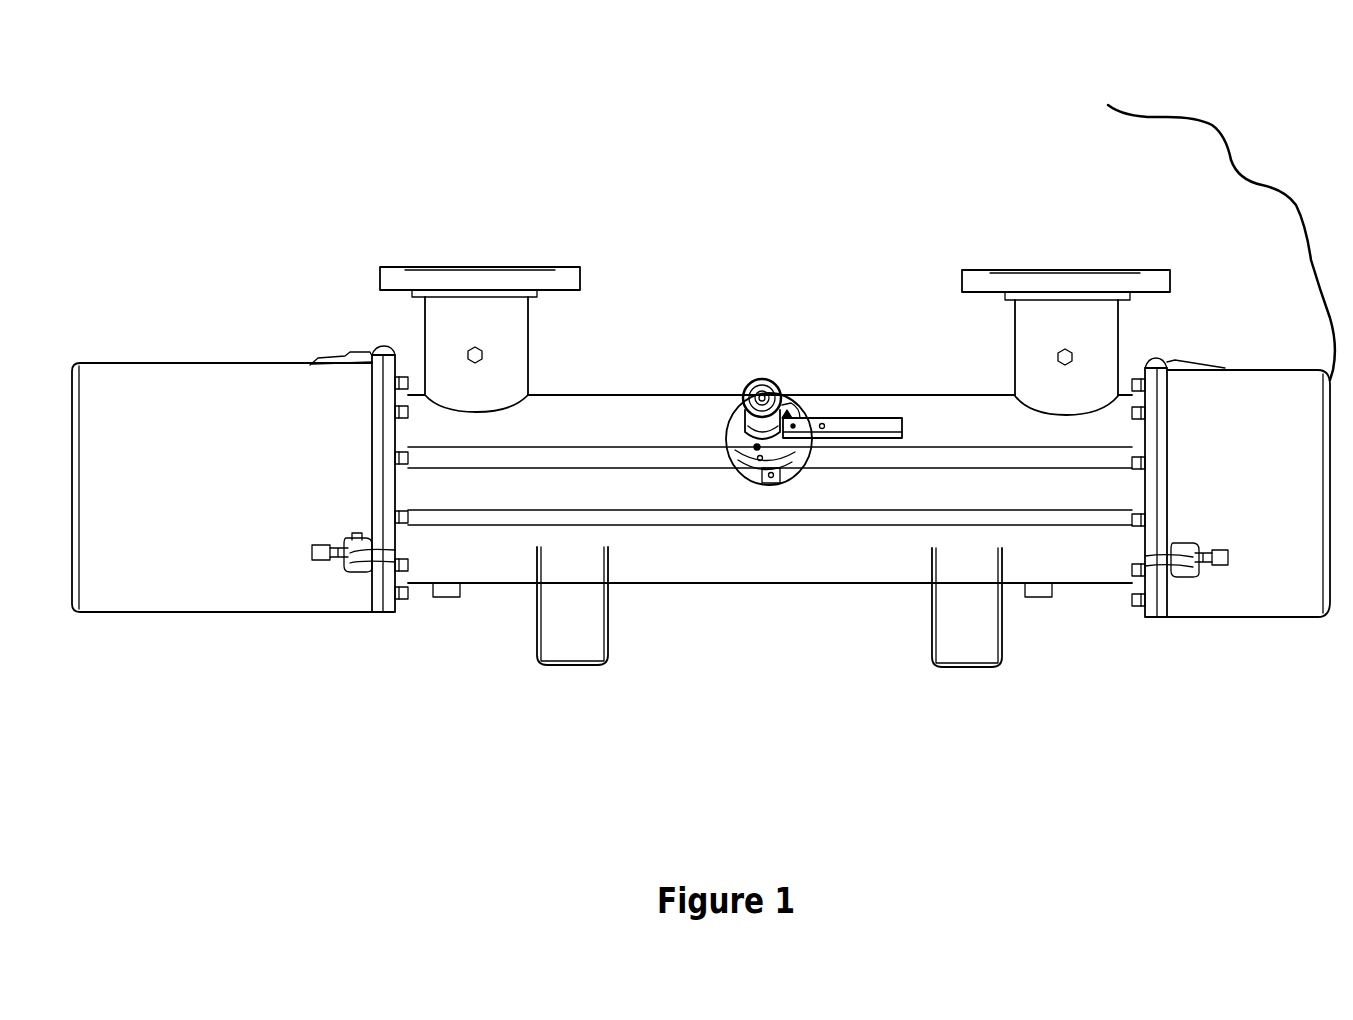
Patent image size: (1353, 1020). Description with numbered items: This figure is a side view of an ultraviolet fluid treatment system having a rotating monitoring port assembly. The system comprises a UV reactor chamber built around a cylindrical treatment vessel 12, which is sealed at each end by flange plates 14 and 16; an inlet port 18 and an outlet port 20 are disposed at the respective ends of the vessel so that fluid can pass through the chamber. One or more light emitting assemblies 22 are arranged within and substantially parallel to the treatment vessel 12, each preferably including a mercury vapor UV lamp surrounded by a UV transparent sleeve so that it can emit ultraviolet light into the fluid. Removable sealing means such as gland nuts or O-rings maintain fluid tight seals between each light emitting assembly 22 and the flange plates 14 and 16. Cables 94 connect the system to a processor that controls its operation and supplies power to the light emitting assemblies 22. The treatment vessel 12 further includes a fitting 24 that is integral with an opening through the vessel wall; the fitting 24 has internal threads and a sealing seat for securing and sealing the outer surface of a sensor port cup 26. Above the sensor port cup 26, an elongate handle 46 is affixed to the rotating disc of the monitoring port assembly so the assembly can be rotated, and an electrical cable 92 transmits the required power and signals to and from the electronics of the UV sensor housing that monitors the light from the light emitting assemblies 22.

The cylindrical treatment vessel 12 is at (604, 413).
The flange plate 14 is at (210, 528).
The flange plate 16 is at (1223, 497).
The inlet port 18 is at (384, 280).
The outlet port 20 is at (975, 281).
The light emitting assembly 22 is at (501, 517).
The fitting 24 is at (754, 478).
The sensor port cup 26 is at (795, 397).
The handle 46 is at (858, 425).
The electrical cable 92 is at (745, 405).
The cables 94 is at (1160, 115).